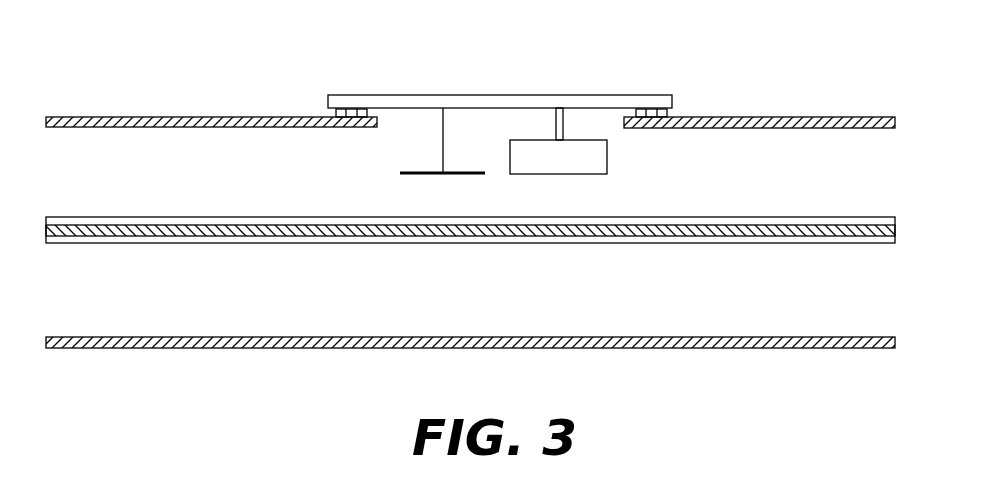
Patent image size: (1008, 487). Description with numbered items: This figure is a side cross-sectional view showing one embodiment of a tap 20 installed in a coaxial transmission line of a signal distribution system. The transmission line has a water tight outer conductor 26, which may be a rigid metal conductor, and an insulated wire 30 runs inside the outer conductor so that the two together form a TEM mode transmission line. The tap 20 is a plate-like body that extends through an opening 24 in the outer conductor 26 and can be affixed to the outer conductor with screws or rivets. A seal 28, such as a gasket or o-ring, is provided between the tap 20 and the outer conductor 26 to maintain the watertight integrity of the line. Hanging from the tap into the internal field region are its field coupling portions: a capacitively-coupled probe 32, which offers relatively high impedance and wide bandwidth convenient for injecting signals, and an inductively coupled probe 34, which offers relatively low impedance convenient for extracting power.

The tap 20 is at (597, 100).
The opening 24 is at (393, 138).
The water tight outer conductor 26 is at (157, 117).
The seal 28 is at (337, 111).
The insulated wire 30 is at (590, 243).
The capacitively-coupled probe 32 is at (427, 174).
The inductively coupled probe 34 is at (607, 158).